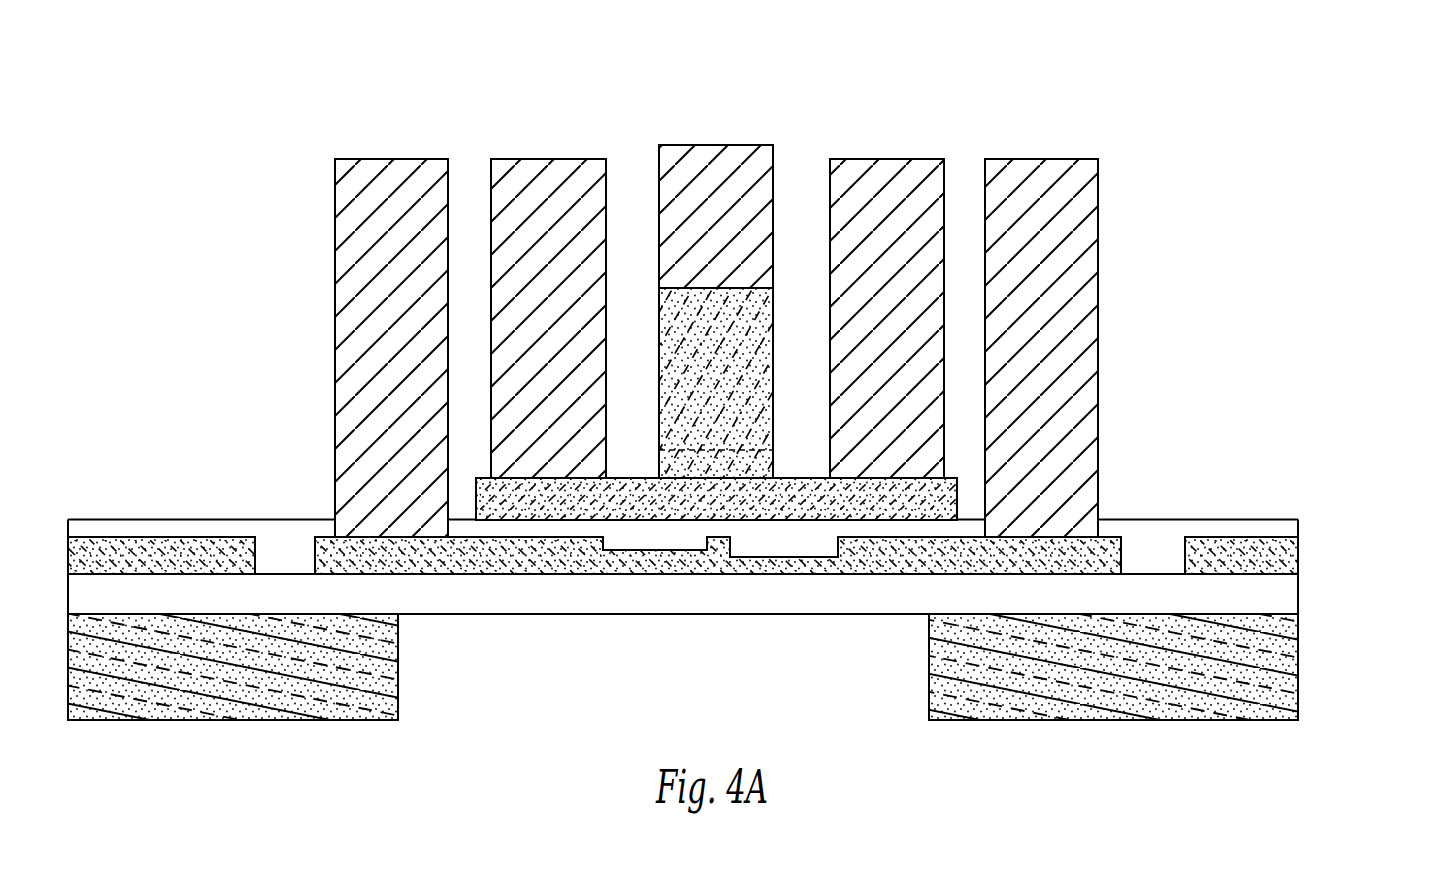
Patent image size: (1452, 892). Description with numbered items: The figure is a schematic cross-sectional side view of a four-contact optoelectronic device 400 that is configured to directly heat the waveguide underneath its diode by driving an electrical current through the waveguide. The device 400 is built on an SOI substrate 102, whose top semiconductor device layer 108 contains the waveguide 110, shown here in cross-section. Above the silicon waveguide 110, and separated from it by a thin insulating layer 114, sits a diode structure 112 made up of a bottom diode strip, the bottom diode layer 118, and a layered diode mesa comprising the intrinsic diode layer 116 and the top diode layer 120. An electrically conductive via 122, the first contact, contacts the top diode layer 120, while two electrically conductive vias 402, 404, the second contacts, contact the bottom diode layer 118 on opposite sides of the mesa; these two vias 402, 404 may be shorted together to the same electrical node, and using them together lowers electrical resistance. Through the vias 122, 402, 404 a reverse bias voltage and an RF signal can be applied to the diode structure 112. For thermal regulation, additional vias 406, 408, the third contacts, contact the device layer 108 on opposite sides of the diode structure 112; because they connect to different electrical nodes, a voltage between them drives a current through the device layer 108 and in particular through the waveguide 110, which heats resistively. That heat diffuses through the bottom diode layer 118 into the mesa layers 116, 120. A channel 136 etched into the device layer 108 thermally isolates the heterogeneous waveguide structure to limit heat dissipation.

The four-contact optoelectronic device 400 is at (1314, 94).
The SOI substrate 102 is at (1365, 539).
The device layer 108 is at (1303, 560).
The waveguide 110 is at (731, 541).
The diode structure 112 is at (1365, 303).
The insulating layer 114 is at (1303, 532).
The intrinsic diode layer 116 is at (718, 455).
The bottom diode layer 118 is at (820, 521).
The top diode layer 120 is at (755, 345).
The electrically conductive via S1 122 is at (685, 145).
The channel 136 is at (282, 562).
The electrically conductive via S2 402 is at (500, 159).
The electrically conductive via S2 404 is at (840, 159).
The additional via 406 is at (345, 159).
The additional via 408 is at (995, 159).